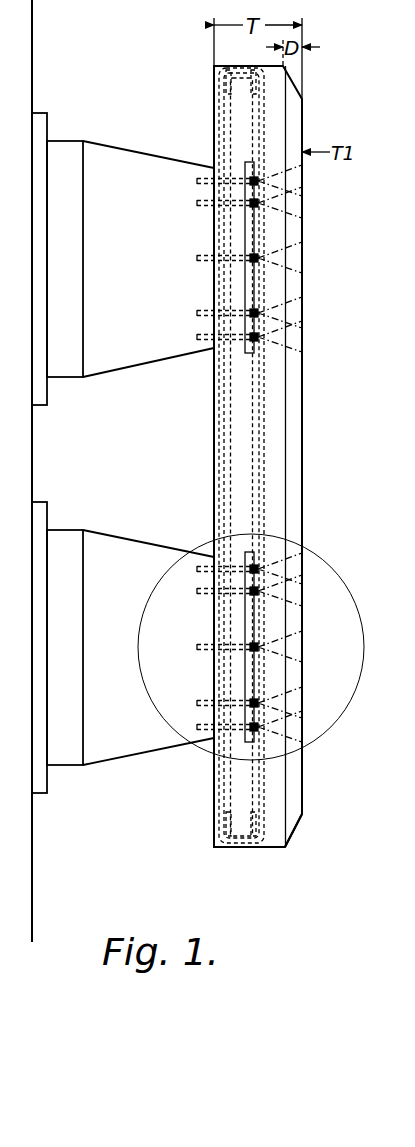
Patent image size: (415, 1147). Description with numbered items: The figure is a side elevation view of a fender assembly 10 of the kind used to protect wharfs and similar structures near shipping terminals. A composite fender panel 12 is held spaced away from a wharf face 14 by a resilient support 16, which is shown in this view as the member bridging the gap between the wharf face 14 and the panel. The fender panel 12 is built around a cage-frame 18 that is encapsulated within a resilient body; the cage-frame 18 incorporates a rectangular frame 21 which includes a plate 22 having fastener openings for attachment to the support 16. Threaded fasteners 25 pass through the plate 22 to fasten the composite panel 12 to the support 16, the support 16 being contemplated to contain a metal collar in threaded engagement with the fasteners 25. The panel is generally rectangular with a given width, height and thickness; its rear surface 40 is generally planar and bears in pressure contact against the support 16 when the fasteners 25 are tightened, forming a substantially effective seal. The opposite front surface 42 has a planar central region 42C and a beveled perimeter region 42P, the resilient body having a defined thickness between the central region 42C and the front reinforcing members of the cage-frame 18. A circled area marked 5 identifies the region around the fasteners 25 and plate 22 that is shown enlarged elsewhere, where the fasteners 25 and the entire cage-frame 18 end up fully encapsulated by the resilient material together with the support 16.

The detail view circle 5 is at (343, 574).
The fender assembly 10 is at (282, 914).
The composite fender panel 12 is at (288, 847).
The wharf face 14 is at (33, 866).
The resilient support 16 is at (117, 371).
The cage-frame 18 is at (216, 392).
The rectangular frame 21 is at (219, 480).
The plate 22 is at (244, 746).
The threaded fasteners 25 is at (260, 591).
The rear surface 40 is at (214, 815).
The front surface 42 is at (303, 815).
The planar central region 42C is at (303, 784).
The panel peripheral portion 42P is at (293, 830).